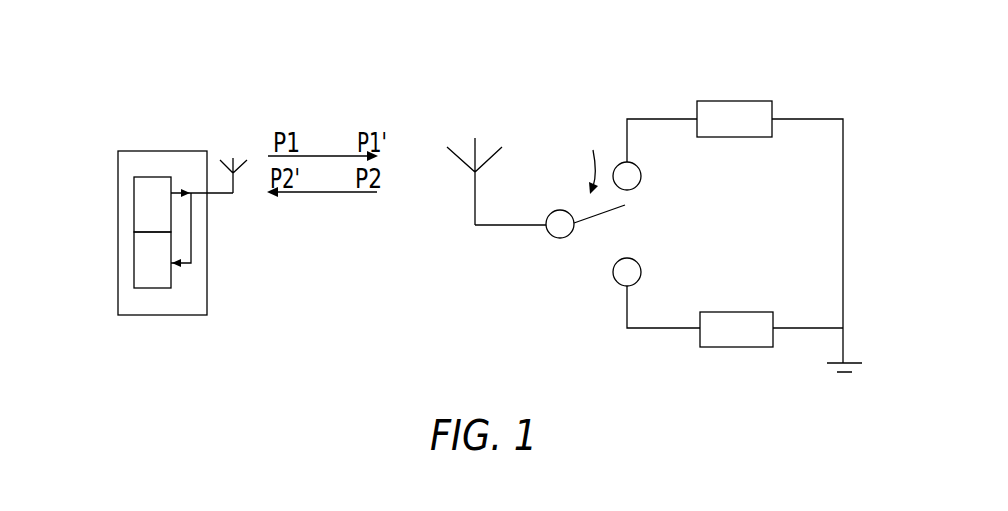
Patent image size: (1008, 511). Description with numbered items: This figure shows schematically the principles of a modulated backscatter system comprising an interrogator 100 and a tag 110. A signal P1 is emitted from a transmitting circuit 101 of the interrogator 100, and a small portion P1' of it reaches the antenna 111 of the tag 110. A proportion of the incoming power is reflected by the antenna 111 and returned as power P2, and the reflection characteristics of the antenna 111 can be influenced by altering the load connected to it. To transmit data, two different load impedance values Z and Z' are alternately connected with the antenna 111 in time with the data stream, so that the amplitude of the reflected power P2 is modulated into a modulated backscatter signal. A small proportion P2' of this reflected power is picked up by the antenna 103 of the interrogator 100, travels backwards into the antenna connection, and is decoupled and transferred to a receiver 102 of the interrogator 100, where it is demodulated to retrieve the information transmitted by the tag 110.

The interrogator 100 is at (157, 242).
The transmitting circuit 101 is at (133, 198).
The receiver 102 is at (171, 280).
The antenna 103 is at (220, 160).
The tag 110 is at (609, 337).
The antenna 111 is at (482, 148).